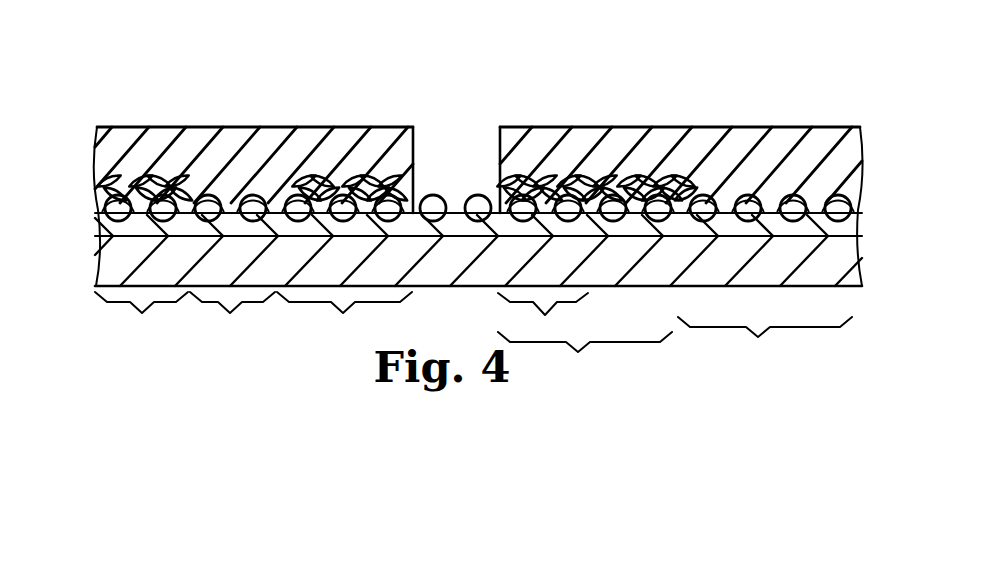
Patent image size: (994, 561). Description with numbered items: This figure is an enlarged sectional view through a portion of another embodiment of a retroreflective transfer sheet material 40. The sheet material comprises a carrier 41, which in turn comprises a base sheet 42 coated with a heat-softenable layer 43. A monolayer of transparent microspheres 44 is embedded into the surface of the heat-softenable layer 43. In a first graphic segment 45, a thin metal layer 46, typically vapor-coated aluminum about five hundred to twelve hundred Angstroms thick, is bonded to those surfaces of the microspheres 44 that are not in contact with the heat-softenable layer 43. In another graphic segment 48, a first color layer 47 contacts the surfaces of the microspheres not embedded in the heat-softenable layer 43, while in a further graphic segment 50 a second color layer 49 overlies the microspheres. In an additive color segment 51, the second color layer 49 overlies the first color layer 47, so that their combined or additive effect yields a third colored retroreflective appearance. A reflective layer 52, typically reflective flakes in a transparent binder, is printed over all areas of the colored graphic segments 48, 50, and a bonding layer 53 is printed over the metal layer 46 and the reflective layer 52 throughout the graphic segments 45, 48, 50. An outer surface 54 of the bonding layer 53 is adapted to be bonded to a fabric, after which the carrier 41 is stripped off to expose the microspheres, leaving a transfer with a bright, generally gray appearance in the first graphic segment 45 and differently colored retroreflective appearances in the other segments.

The retroreflective transfer sheet material 40 is at (500, 108).
The carrier 41 is at (870, 210).
The base sheet 42 is at (120, 263).
The heat-softenable layer 43 is at (106, 233).
The transparent microspheres 44 is at (103, 207).
The first graphic segment 45 is at (521, 329).
The metal layer 46 is at (250, 195).
The first color layer 47 is at (108, 191).
The graphic segment 48 is at (383, 337).
The second color layer 49 is at (318, 190).
The graphic segment 50 is at (344, 318).
The additive color segment 51 is at (543, 319).
The reflective layer 52 is at (147, 183).
The bonding layer 53 is at (120, 151).
The outer surface 54 is at (292, 127).